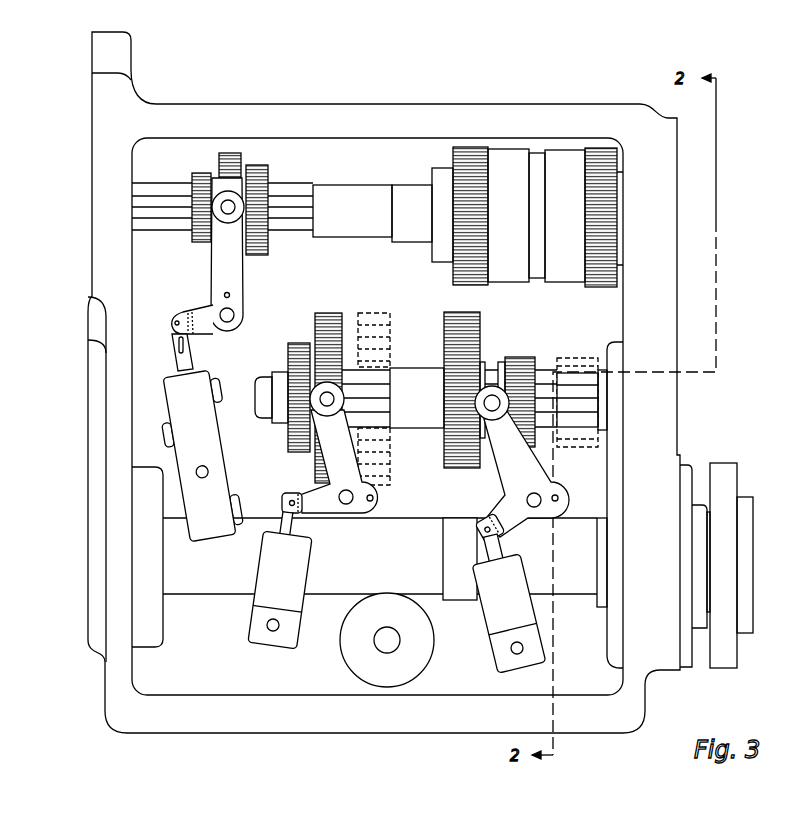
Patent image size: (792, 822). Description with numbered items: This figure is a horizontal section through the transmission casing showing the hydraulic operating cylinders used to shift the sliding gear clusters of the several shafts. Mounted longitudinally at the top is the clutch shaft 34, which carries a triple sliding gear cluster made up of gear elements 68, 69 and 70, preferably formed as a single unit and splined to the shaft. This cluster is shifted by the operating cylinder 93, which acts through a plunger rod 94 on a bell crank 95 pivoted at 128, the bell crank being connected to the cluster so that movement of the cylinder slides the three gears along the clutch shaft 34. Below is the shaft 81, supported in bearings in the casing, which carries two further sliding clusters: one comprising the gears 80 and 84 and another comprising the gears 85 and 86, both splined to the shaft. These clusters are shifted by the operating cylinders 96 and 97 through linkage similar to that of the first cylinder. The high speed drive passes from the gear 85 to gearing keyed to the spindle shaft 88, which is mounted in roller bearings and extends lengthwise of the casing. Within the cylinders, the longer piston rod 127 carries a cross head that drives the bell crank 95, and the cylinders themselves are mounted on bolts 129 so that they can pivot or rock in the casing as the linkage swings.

The clutch shaft 34 is at (343, 195).
The gear element 68 is at (197, 176).
The gear element 69 is at (233, 154).
The gear element 70 is at (263, 176).
The bell crank 95 is at (237, 278).
The pivot 128 is at (234, 315).
The plunger rod 94 is at (186, 367).
The operating cylinder 93 is at (211, 446).
The gear 80 is at (297, 453).
The shaft 81 is at (408, 378).
The gear 84 is at (316, 469).
The gear 85 is at (472, 334).
The gear 86 is at (520, 367).
The spindle shaft 88 is at (385, 602).
The operating cylinder 96 is at (300, 583).
The operating cylinder 97 is at (517, 590).
The longer piston rod 127 is at (267, 628).
The bolts 129 is at (510, 650).